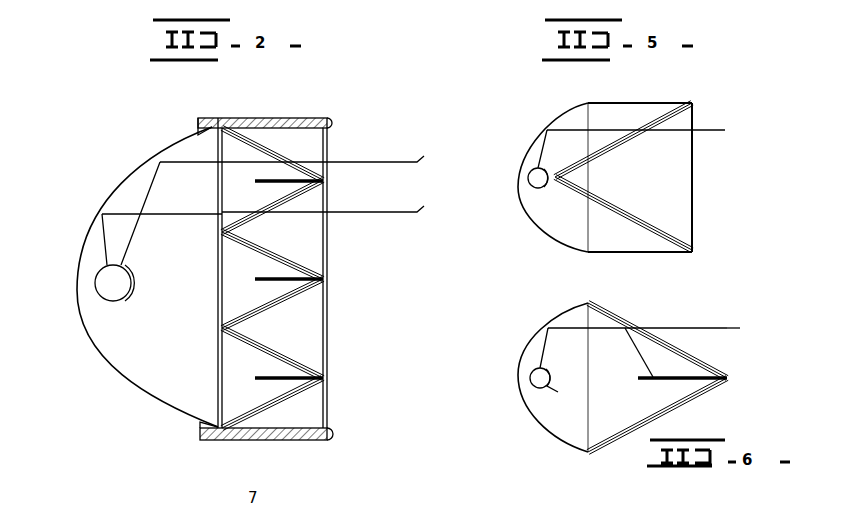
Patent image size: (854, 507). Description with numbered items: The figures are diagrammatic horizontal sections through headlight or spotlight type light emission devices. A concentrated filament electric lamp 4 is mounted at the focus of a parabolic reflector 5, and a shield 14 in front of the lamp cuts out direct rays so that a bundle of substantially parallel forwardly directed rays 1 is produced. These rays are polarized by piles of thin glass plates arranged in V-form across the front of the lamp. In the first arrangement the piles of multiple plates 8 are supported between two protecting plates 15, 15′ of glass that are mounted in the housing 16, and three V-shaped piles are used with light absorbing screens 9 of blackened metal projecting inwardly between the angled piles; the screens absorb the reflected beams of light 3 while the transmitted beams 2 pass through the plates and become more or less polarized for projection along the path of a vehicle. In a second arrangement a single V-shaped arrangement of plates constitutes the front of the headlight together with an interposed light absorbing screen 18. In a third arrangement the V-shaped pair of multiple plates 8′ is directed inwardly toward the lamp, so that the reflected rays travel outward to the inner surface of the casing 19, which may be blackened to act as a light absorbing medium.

In FIG. 2, the forwardly directed rays 1 is at (162, 205).
In FIG. 5, the forwardly directed rays 1 is at (615, 141).
In FIG. 6, the forwardly directed rays 1 is at (633, 346).
In FIG. 2, the transmitted beams 2 is at (327, 181).
In FIG. 5, the transmitted beams 2 is at (714, 123).
In FIG. 6, the transmitted beams 2 is at (741, 328).
In FIG. 2, the reflected beams of light 3 is at (287, 178).
In FIG. 5, the reflected beams of light 3 is at (650, 103).
In FIG. 6, the reflected beams of light 3 is at (640, 354).
In FIG. 2, the concentrated filament electric lamp 4 is at (95, 283).
In FIG. 5, the concentrated filament electric lamp 4 is at (527, 178).
In FIG. 2, the parabolic reflector 5 is at (140, 175).
In FIG. 5, the parabolic reflector 5 is at (550, 234).
In FIG. 2, the multiple plates 8 is at (280, 153).
In FIG. 5, the multiple plates 8′ is at (620, 148).
In FIG. 2, the light absorbing screens 9 is at (324, 181).
In FIG. 2, the shield 14 is at (137, 283).
In FIG. 5, the shield 14 is at (547, 186).
In FIG. 6, the shield 14 is at (558, 392).
In FIG. 2, the protecting plate 15 is at (218, 337).
In FIG. 2, the protecting plate 15′ is at (327, 330).
In FIG. 2, the housing 16 is at (291, 118).
In FIG. 6, the light absorbing screen 18 is at (727, 378).
In FIG. 5, the casing 19 is at (630, 252).